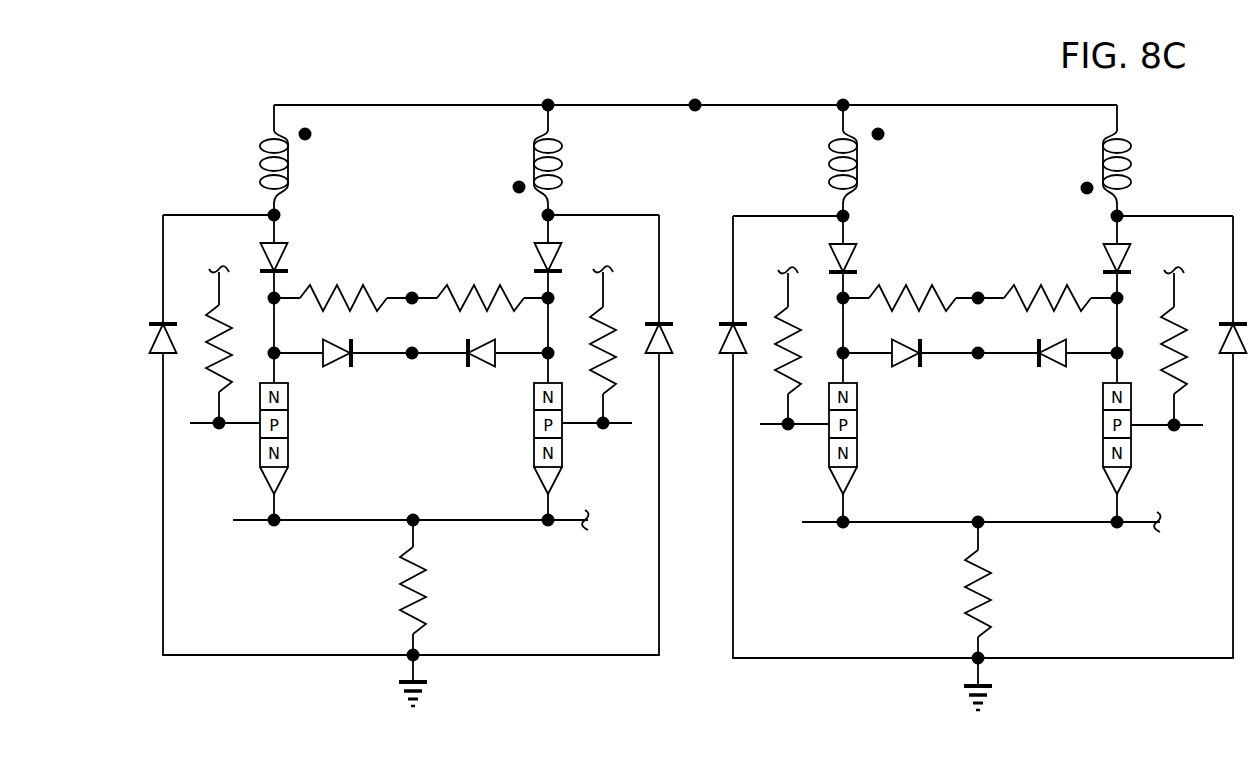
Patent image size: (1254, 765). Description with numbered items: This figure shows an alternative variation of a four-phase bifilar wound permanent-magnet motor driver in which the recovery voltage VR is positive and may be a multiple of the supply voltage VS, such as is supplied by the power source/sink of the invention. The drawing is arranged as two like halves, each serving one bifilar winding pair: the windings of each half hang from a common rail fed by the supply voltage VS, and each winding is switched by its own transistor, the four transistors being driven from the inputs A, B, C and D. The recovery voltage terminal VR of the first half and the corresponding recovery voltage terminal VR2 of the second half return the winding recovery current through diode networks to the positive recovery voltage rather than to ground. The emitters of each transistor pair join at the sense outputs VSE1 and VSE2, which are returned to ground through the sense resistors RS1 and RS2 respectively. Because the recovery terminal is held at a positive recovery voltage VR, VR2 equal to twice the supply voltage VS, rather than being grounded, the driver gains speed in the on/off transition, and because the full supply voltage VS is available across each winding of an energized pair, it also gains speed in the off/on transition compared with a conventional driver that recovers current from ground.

The supply voltage VS is at (695, 105).
The recovery voltage VR is at (412, 353).
The reference voltage terminal +VR (second channel) VR2 is at (978, 353).
The sense voltage output VSE1 is at (386, 527).
The sense voltage output VSE2 is at (952, 529).
The base drive input A with +S pull-up resistor A is at (221, 353).
The base drive input B with +S pull-up resistor B is at (600, 354).
The base drive input C with +S pull-up resistor C is at (788, 355).
The base drive input D with +5 pull-up resistor D is at (1175, 355).
The sense resistor RS1 is at (427, 598).
The sense resistor RS2 is at (991, 594).